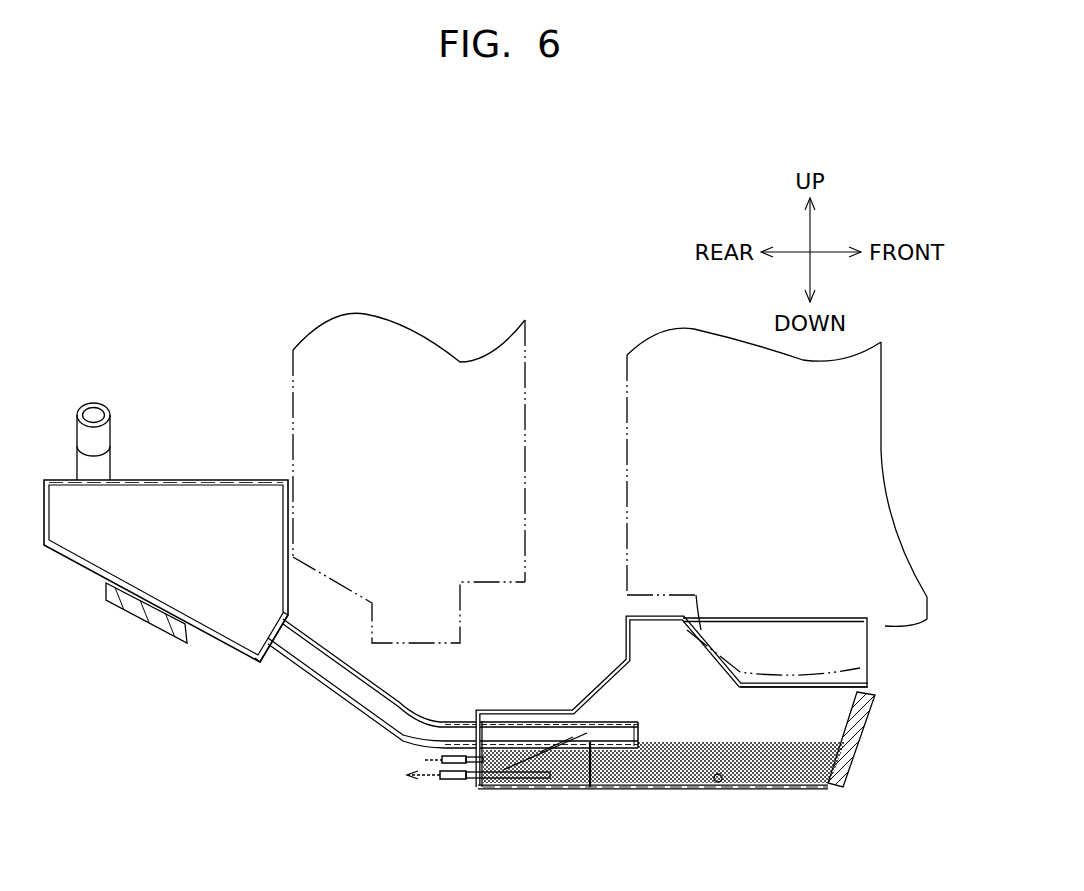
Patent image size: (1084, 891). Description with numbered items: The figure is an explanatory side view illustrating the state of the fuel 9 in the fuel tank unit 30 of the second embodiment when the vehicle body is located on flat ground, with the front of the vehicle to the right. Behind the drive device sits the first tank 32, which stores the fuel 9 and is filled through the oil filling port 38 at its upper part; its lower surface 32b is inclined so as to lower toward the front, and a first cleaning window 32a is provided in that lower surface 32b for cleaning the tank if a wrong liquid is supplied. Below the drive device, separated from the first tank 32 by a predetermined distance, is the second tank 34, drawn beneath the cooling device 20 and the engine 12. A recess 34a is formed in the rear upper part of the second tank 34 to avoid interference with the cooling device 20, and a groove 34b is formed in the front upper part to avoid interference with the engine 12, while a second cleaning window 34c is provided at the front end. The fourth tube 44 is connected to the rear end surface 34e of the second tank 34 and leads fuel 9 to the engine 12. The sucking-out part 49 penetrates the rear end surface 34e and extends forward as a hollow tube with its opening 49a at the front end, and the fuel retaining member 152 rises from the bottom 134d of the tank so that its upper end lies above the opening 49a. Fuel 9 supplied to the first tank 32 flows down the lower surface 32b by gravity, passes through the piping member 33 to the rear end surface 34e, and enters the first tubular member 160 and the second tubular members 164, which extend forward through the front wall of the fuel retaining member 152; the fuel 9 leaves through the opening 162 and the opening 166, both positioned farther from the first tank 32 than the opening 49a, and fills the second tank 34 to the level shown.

The fuel 9 is at (726, 753).
The engine 12 is at (663, 368).
The cooling device 20 is at (318, 360).
The fuel tank unit 30 is at (470, 680).
The first tank 32 is at (166, 598).
The first cleaning window 32a is at (148, 612).
The lower surface 32b is at (257, 666).
The piping member 33 is at (335, 678).
The second tank 34 is at (652, 726).
The recess 34a is at (604, 688).
The groove 34b is at (838, 630).
The second cleaning window 34c is at (857, 748).
The rear end surface 34e is at (480, 790).
The oil filling port 38 is at (95, 412).
The fourth tube 44 is at (480, 748).
The sucking-out part 49 is at (490, 786).
The opening 49a is at (552, 786).
The bottom 134d is at (718, 790).
The fuel retaining member 152 is at (588, 788).
The first tubular member 160 is at (545, 704).
The second tubular member 164 is at (500, 718).
The opening 162 is at (602, 807).
The opening 166 is at (630, 787).